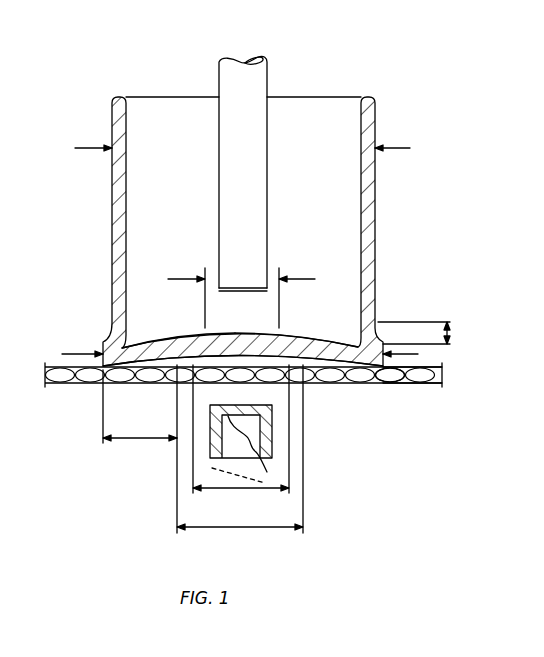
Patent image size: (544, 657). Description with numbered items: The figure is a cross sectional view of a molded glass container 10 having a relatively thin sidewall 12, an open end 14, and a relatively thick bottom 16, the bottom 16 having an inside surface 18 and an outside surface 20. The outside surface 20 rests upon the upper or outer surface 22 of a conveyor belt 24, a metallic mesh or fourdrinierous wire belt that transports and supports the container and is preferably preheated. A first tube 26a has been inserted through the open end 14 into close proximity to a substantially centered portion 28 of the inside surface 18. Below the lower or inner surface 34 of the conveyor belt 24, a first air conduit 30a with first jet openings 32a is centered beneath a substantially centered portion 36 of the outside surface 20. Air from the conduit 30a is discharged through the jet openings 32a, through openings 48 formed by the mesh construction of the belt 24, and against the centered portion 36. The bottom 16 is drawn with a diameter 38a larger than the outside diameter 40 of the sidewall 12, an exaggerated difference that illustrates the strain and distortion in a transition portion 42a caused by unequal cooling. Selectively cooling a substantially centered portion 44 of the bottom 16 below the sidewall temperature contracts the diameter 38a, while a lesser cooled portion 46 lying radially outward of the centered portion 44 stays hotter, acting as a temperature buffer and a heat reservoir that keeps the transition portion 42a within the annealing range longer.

The molded glass container 10 is at (410, 108).
The sidewall 12 is at (110, 125).
The open end 14 is at (314, 97).
The bottom 16 is at (166, 337).
The inside surface 18 is at (304, 336).
The outside surface 20 is at (307, 383).
The upper surface of conveyor belt 22 is at (425, 368).
The conveyor belt 24 is at (445, 377).
The first tube 26a is at (268, 80).
The substantially centered portion of inside surface 28 is at (290, 278).
The first air conduit 30a is at (272, 445).
The first jet openings 32a is at (267, 478).
The lower surface of conveyor belt 34 is at (415, 385).
The substantially centered portion of outside surface 36 is at (292, 490).
The bottom diameter 38a is at (80, 352).
The outside diameter of sidewall 40 is at (97, 150).
The transition portion 42a is at (450, 330).
The substantially centered portion of bottom 44 is at (275, 530).
The lesser cooled portion 46 is at (140, 440).
The openings 48 is at (386, 380).